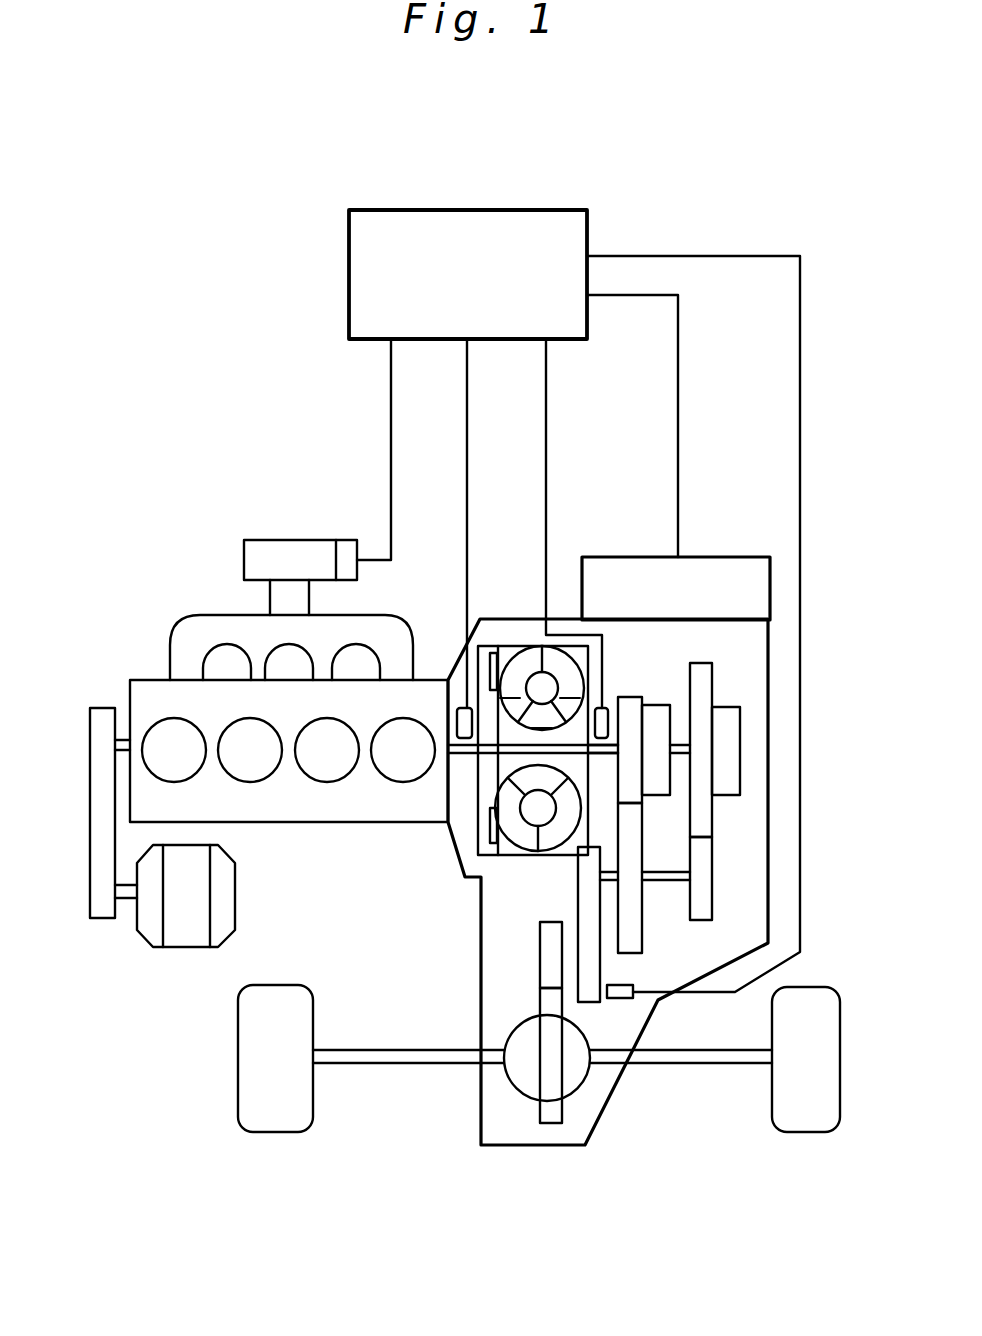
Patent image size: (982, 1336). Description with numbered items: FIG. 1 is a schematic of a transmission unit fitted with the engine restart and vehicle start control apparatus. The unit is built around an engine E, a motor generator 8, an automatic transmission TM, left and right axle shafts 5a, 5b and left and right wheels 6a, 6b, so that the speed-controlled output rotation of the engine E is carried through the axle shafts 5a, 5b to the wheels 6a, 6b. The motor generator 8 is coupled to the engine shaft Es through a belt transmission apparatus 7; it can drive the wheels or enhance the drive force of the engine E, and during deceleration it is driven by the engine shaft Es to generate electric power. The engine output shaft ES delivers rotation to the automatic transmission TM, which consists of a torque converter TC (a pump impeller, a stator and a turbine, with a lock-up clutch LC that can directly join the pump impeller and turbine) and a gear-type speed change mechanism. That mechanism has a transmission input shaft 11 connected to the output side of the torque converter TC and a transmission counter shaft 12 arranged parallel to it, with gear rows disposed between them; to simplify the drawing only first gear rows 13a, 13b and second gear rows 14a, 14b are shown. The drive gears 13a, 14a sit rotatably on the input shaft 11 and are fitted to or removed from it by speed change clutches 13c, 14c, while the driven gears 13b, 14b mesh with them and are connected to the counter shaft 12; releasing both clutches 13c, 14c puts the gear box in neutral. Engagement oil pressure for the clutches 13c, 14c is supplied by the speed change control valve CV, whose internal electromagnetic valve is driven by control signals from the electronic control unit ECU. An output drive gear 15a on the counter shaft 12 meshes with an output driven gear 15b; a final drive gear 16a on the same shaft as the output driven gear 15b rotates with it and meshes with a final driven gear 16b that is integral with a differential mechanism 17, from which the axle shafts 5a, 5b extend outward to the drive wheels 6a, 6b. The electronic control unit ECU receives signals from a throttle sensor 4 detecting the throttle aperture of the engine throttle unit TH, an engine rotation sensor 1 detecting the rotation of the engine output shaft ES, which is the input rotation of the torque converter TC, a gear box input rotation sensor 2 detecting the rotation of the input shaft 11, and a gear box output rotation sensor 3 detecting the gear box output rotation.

The engine rotation sensor 1 is at (456, 718).
The gear box input rotation sensor 2 is at (605, 708).
The gear box output rotation sensor 3 is at (630, 985).
The throttle sensor 4 is at (349, 546).
The axle shaft 5a is at (723, 1065).
The axle shaft 5b is at (372, 1064).
The drive wheel 6a is at (838, 1000).
The drive wheel 6b is at (245, 1025).
The belt transmission apparatus 7 is at (98, 808).
The motor generator 8 is at (178, 935).
The transmission input shaft 11 is at (601, 757).
The transmission counter shaft 12 is at (664, 882).
The drive gear 13a is at (636, 700).
The driven gear 13b is at (633, 818).
The speed change clutch 13c is at (658, 720).
The drive gear 14a is at (702, 672).
The driven gear 14b is at (703, 885).
The speed change clutch 14c is at (737, 720).
The output drive gear 15a is at (580, 877).
The output driven gear 15b is at (597, 1002).
The final drive gear 16a is at (540, 952).
The final driven gear 16b is at (552, 1125).
The differential mechanism 17 is at (578, 1078).
The engine E is at (152, 686).
The engine shaft Es is at (126, 735).
The engine output shaft ES is at (456, 762).
The torque converter TC is at (518, 646).
The lock-up clutch LC is at (488, 826).
The automatic transmission TM is at (478, 892).
The speed change control valve CV is at (703, 609).
The engine throttle unit TH is at (267, 548).
The electronic control unit ECU is at (507, 294).